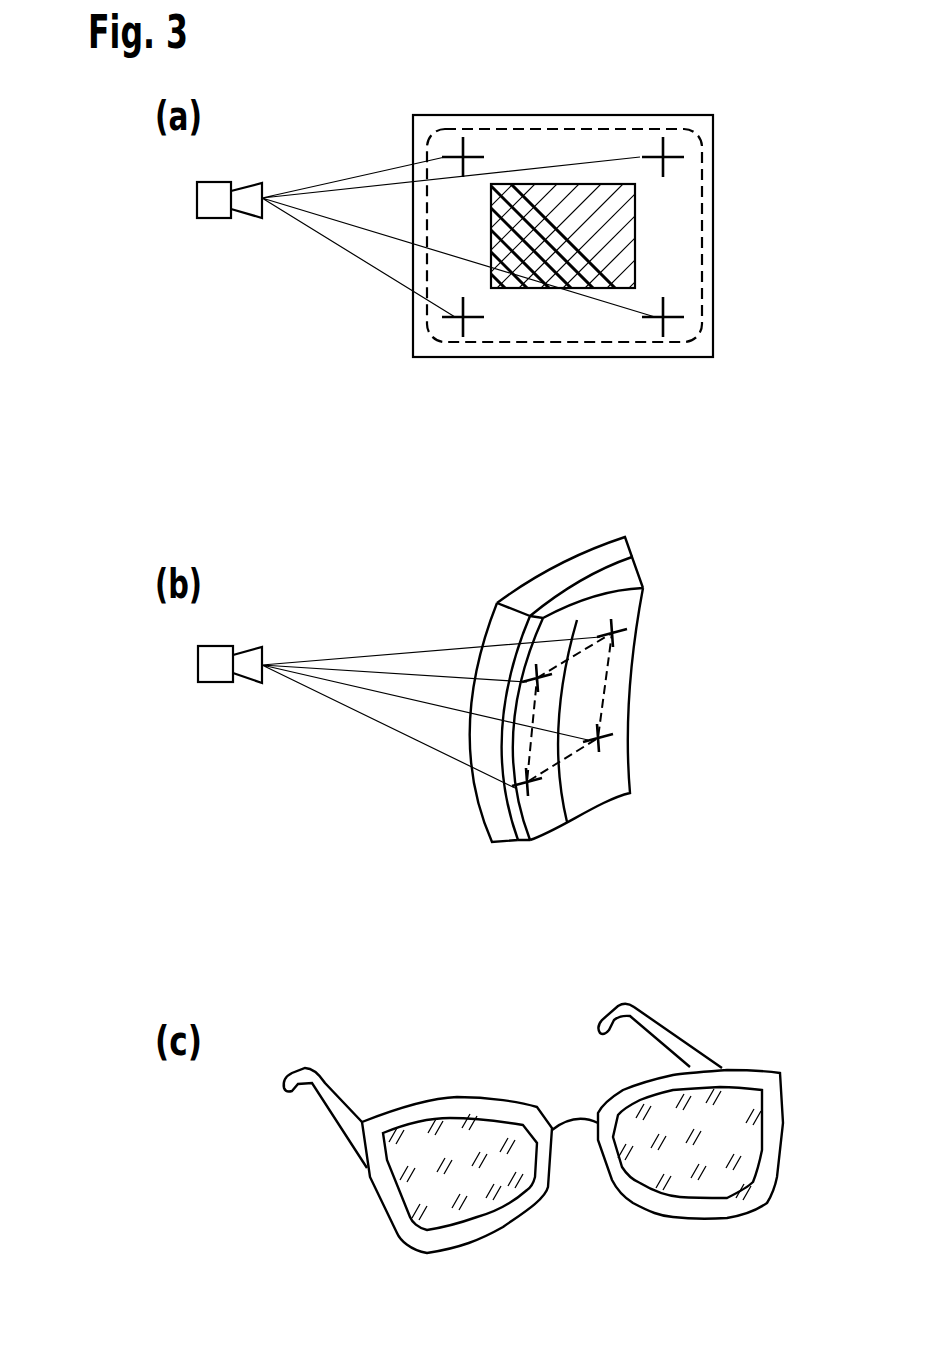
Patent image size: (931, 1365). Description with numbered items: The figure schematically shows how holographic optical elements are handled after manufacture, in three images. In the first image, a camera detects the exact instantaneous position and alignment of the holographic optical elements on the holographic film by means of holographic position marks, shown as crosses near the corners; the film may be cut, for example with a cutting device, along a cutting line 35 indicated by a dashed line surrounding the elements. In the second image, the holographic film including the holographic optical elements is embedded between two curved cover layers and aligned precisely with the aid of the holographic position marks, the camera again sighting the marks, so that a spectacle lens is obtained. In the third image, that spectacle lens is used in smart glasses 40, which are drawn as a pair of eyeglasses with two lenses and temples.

The cutting line 35 is at (702, 341).
The smart glasses 40 is at (504, 1146).